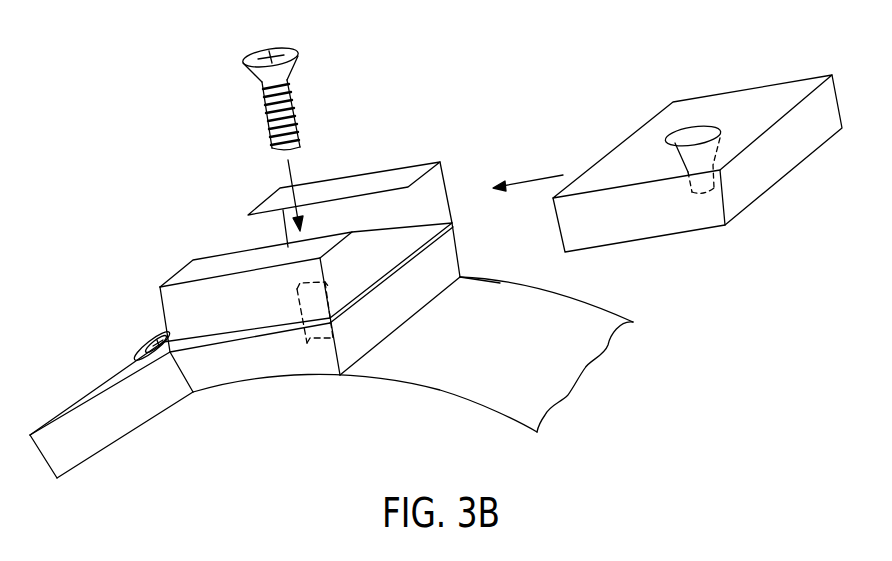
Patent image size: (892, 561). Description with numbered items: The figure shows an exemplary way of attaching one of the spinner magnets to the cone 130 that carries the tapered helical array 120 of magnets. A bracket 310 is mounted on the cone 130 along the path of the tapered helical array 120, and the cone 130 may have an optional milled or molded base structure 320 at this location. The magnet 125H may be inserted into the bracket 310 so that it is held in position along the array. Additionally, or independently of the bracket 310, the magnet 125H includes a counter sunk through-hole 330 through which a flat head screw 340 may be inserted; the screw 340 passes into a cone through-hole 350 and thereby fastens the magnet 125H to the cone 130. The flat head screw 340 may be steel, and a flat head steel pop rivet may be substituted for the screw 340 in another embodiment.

The tapered helical array 120 is at (600, 318).
The magnet 125H is at (802, 77).
The cone 130 is at (274, 436).
The bracket 310 is at (425, 162).
The base structure 320 is at (458, 253).
The counter sunk through-hole 330 is at (678, 130).
The flat head screw 340 is at (293, 108).
The cone through-hole 350 is at (307, 280).